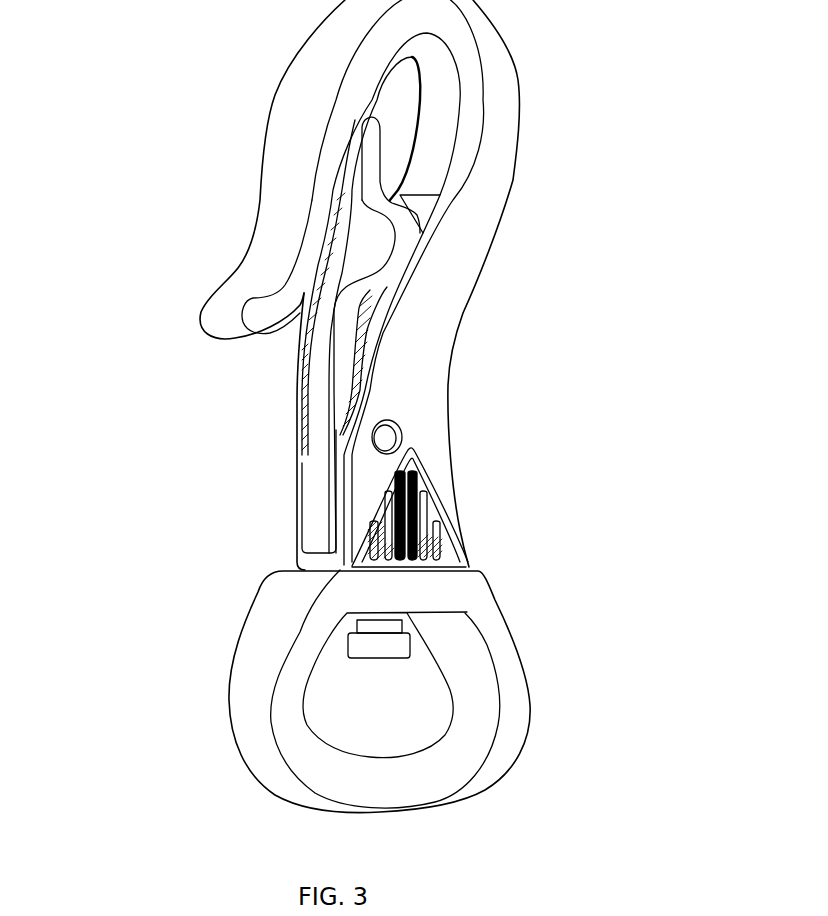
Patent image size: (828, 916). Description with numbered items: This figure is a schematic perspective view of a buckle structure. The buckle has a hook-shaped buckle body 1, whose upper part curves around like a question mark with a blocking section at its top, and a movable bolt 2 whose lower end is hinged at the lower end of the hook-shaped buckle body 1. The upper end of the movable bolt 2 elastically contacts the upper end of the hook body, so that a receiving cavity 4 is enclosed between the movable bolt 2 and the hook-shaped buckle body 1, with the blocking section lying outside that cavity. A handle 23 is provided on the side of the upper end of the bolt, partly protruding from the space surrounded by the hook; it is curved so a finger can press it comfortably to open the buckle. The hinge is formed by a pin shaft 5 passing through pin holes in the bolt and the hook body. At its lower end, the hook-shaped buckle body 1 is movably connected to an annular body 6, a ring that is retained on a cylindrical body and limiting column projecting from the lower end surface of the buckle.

The hook-shaped buckle body 1 is at (300, 158).
The movable bolt 2 is at (318, 373).
The receiving cavity 4 is at (397, 113).
The pin shaft 5 is at (392, 435).
The annular body 6 is at (263, 667).
The handle 23 is at (378, 237).